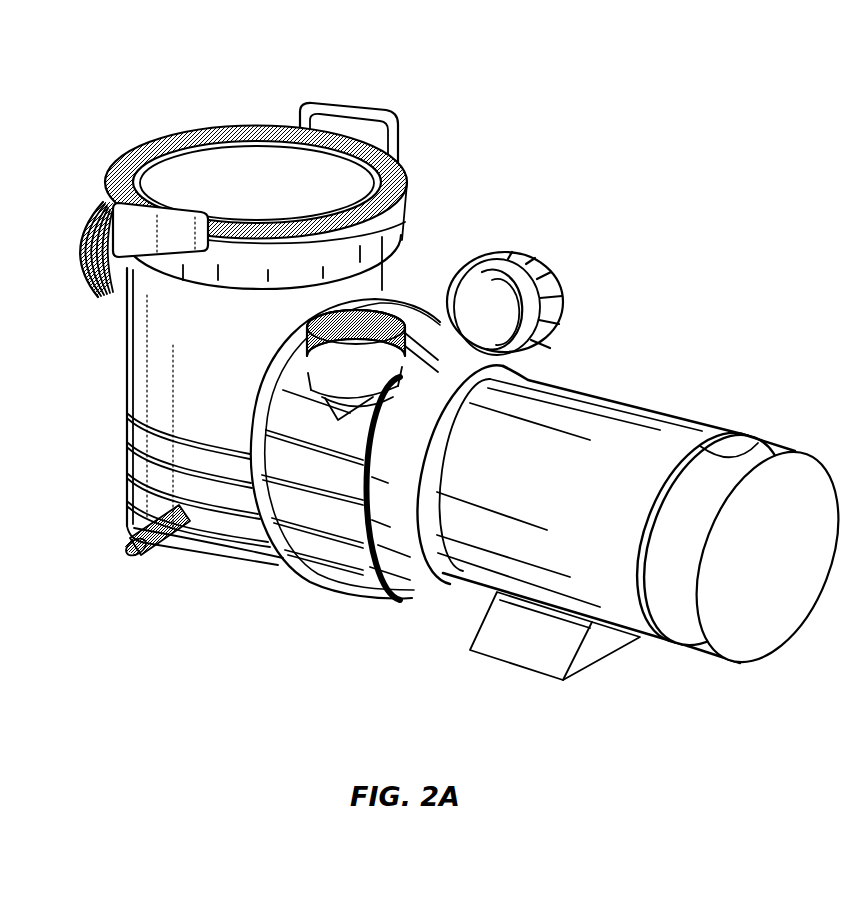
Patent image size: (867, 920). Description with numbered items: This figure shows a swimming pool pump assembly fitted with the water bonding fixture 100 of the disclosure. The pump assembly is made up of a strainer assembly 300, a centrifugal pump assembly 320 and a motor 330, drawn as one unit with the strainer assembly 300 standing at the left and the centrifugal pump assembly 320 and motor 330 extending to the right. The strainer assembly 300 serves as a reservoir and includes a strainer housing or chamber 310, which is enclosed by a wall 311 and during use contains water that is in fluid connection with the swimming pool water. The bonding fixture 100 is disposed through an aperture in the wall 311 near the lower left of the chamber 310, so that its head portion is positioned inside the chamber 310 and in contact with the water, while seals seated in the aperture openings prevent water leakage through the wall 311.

The bonding fixture 100 is at (133, 550).
The strainer assembly 300 is at (277, 109).
The strainer housing or chamber 310 is at (183, 395).
The wall 311 is at (123, 353).
The centrifugal pump assembly 320 is at (333, 596).
The motor 330 is at (660, 408).